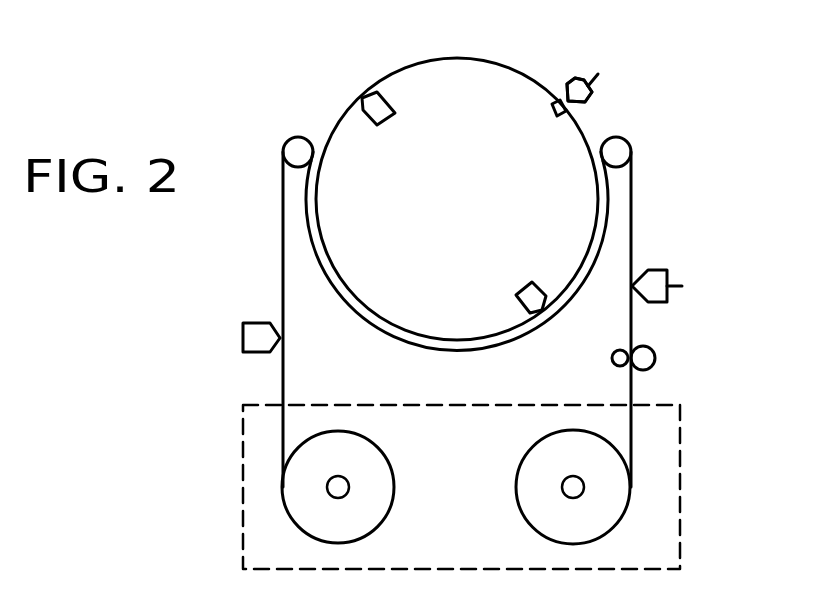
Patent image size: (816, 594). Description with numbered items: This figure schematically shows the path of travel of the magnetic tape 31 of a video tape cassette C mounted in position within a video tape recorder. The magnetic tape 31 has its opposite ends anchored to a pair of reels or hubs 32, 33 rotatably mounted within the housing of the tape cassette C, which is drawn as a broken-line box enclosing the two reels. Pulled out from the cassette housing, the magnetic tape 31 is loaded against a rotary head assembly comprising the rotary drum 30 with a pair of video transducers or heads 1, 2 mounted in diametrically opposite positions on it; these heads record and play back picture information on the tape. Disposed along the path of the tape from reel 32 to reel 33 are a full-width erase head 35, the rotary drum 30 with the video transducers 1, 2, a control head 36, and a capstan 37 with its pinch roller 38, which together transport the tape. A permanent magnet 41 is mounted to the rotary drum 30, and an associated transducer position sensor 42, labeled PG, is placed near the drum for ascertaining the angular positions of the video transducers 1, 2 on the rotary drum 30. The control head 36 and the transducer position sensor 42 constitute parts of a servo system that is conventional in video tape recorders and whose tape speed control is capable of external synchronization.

The video transducer 1 is at (390, 118).
The video transducer 2 is at (520, 284).
The rotary drum 30 is at (458, 57).
The magnetic tape 31 is at (458, 352).
The reel 32 is at (394, 497).
The reel 33 is at (630, 505).
The full-width erase head 35 is at (256, 353).
The control head 36 is at (648, 269).
The capstan 37 is at (613, 364).
The pinch roller 38 is at (654, 366).
The permanent magnet 41 is at (568, 112).
The transducer position sensor 42 is at (592, 93).
The pulse generator PG is at (582, 80).
The video tape cassette C is at (680, 462).